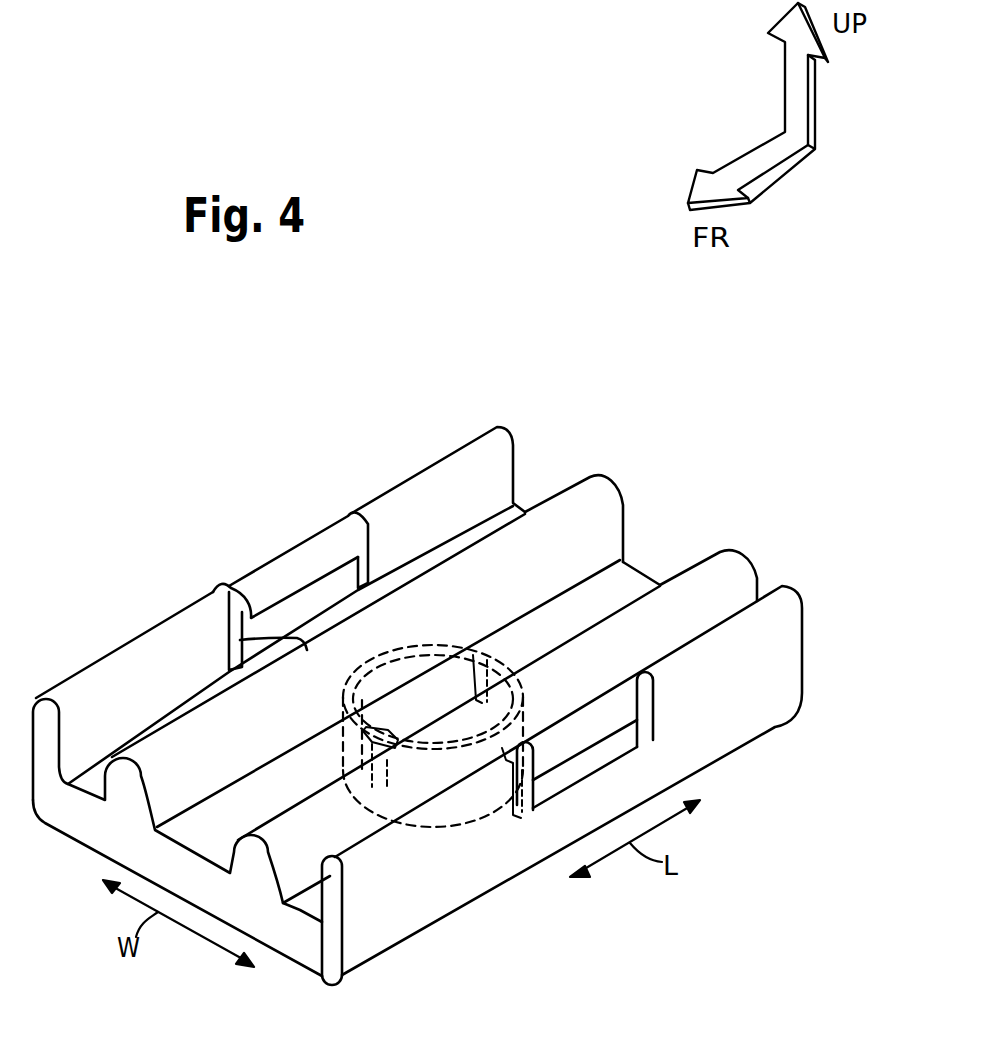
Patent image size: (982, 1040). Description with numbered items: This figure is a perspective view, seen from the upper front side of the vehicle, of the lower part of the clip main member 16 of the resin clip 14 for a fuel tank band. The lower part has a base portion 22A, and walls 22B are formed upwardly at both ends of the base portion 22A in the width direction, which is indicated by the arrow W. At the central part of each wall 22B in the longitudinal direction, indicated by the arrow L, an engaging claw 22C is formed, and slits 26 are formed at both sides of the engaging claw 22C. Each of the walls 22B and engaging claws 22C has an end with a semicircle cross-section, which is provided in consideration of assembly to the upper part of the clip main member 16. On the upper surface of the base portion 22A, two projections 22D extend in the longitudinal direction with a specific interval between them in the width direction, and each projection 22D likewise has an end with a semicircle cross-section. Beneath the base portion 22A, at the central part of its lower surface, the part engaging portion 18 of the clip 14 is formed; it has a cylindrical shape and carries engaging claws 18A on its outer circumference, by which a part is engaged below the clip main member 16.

The clip 14 is at (528, 418).
The clip main member 16 is at (620, 487).
The part engaging portion 18 is at (475, 828).
The engaging claws 18A is at (497, 660).
The base portion 22A is at (218, 846).
The walls 22B is at (428, 483).
The engaging claws 22C is at (299, 550).
The projections 22D is at (563, 500).
The slits 26 is at (352, 560).